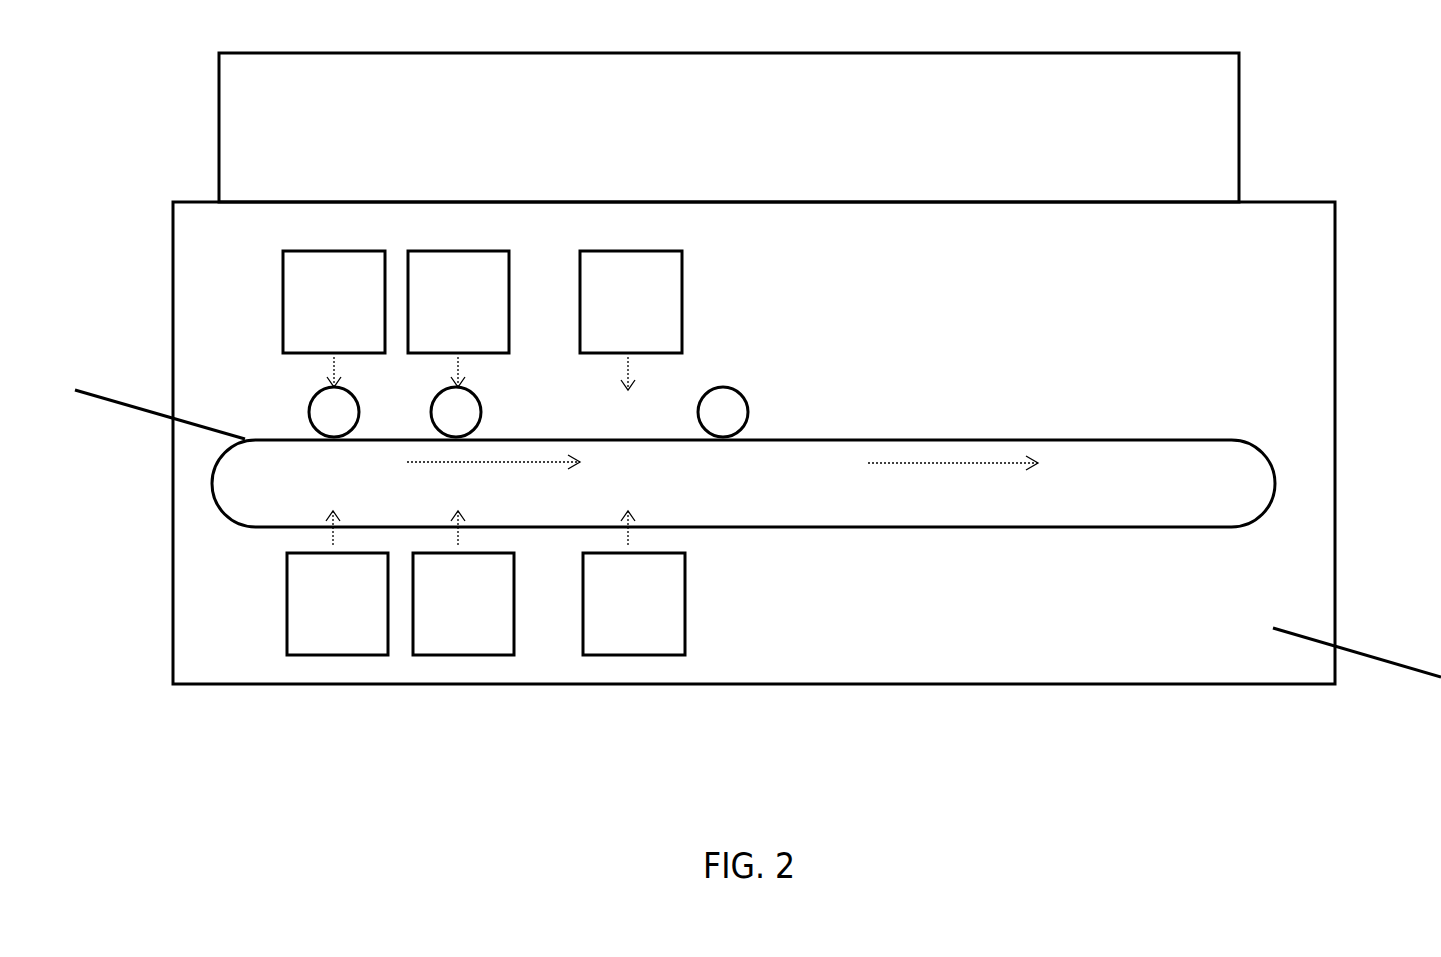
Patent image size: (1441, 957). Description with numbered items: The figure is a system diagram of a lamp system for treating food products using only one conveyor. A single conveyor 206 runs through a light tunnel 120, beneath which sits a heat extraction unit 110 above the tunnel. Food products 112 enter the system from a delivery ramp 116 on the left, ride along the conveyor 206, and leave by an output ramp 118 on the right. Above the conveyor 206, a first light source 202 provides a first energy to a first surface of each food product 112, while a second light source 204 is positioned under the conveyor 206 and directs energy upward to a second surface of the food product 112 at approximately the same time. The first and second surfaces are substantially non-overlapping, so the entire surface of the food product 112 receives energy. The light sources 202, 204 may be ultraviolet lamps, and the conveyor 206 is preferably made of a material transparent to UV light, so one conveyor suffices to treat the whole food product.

The heat extraction unit 110 is at (729, 127).
The light tunnel 120 is at (754, 443).
The delivery ramp 116 is at (160, 393).
The output ramp 118 is at (1357, 636).
The food products 112 is at (494, 408).
The first light source 202 is at (440, 320).
The second light source 204 is at (530, 583).
The conveyor 206 is at (743, 483).